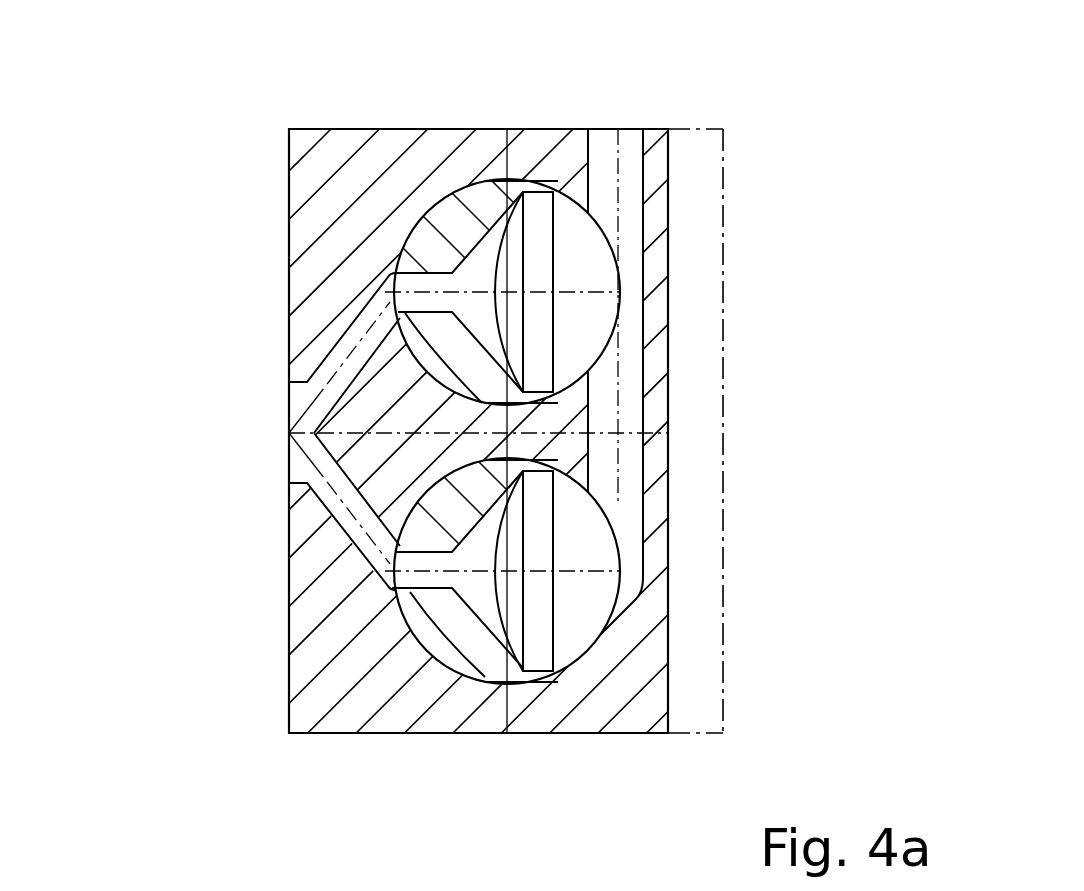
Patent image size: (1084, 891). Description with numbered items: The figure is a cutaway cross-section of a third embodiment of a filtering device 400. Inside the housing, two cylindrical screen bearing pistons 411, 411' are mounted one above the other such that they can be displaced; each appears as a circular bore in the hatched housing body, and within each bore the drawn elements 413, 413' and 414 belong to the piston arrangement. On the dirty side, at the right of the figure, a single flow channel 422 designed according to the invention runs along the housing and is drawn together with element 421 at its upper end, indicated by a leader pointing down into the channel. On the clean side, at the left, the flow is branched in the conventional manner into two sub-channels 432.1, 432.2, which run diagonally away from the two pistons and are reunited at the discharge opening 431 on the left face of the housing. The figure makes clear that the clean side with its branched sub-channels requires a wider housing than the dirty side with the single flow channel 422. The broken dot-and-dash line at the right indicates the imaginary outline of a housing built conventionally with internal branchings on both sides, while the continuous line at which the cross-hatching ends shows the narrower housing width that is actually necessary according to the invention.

The filtering device 400 is at (170, 116).
The screen bearing piston 411 is at (476, 220).
The screen bearing piston 411' is at (492, 648).
The valve seat 413 is at (708, 292).
The second valve seat 413' is at (712, 571).
The valve element 414 is at (538, 328).
The inlet channel 421 is at (624, 127).
The flow channel 422 is at (630, 458).
The discharge opening 431 is at (278, 415).
The sub-channel 432.1 is at (328, 357).
The sub-channel 432.2 is at (355, 530).